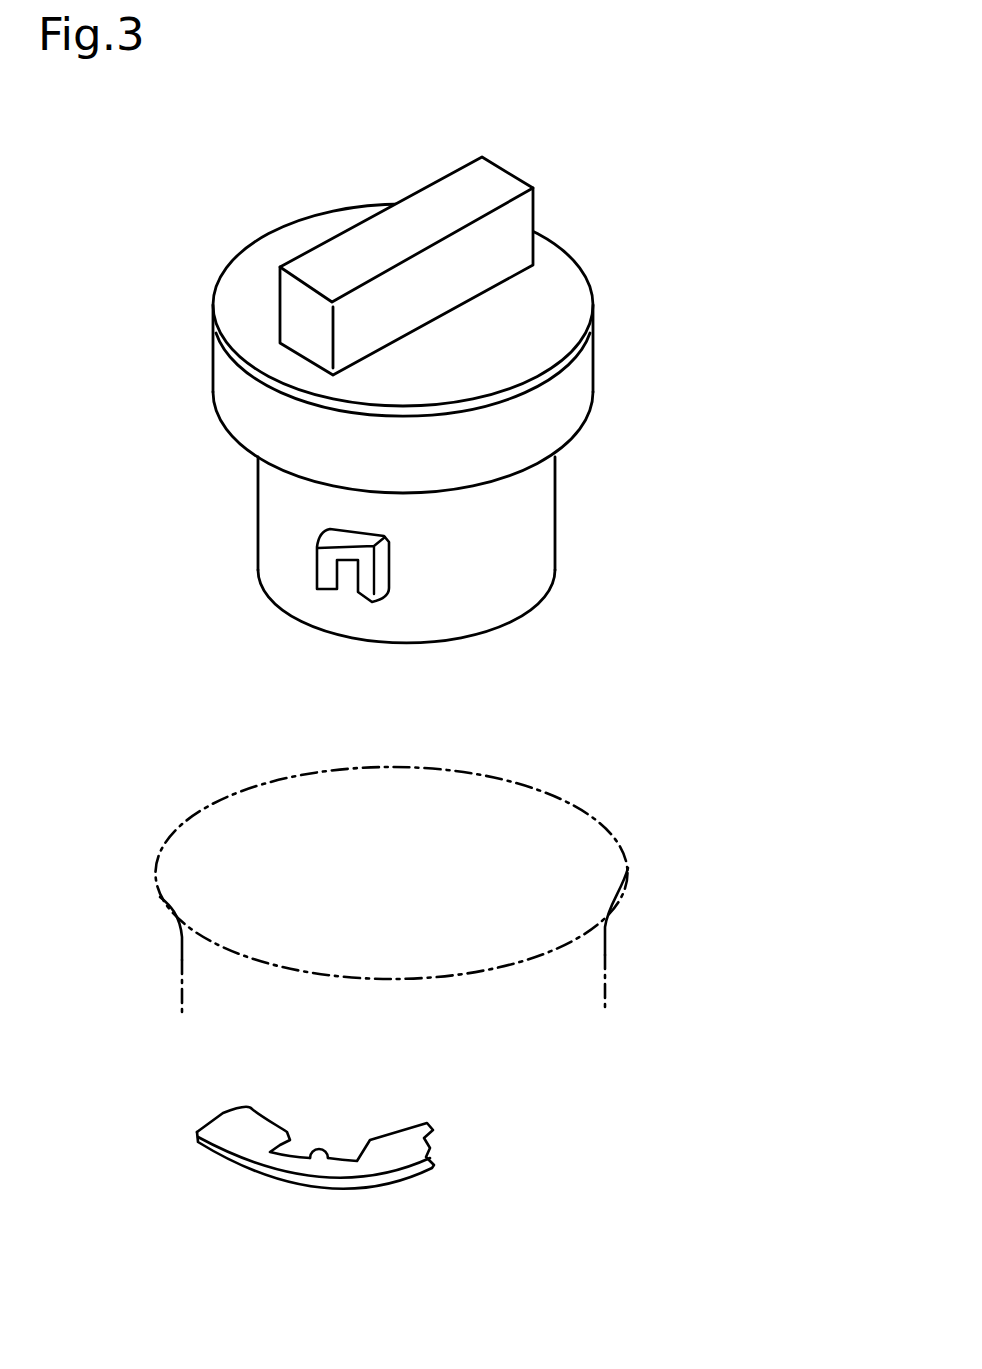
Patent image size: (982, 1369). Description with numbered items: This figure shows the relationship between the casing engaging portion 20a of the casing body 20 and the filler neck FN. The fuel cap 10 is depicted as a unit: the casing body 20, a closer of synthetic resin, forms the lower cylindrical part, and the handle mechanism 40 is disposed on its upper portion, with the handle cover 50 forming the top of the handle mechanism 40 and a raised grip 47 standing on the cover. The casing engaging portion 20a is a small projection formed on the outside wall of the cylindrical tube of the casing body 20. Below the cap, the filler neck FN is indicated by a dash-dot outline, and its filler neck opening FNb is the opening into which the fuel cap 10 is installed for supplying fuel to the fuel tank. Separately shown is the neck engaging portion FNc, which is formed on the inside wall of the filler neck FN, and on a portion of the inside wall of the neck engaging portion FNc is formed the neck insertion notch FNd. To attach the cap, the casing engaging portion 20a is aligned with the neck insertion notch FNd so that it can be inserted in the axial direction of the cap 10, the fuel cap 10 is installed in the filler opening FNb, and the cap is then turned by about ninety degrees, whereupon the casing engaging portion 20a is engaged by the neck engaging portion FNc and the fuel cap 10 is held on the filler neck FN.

The fuel cap 10 is at (623, 257).
The casing body 20 is at (540, 534).
The casing engaging portion 20a is at (382, 577).
The handle mechanism 40 is at (575, 383).
The grip 47 is at (523, 215).
The handle cover 50 is at (565, 250).
The filler neck FN is at (608, 882).
The filler neck opening FNb is at (530, 807).
The neck engaging portion FNc is at (380, 1162).
The neck insertion notch FNd is at (312, 1158).